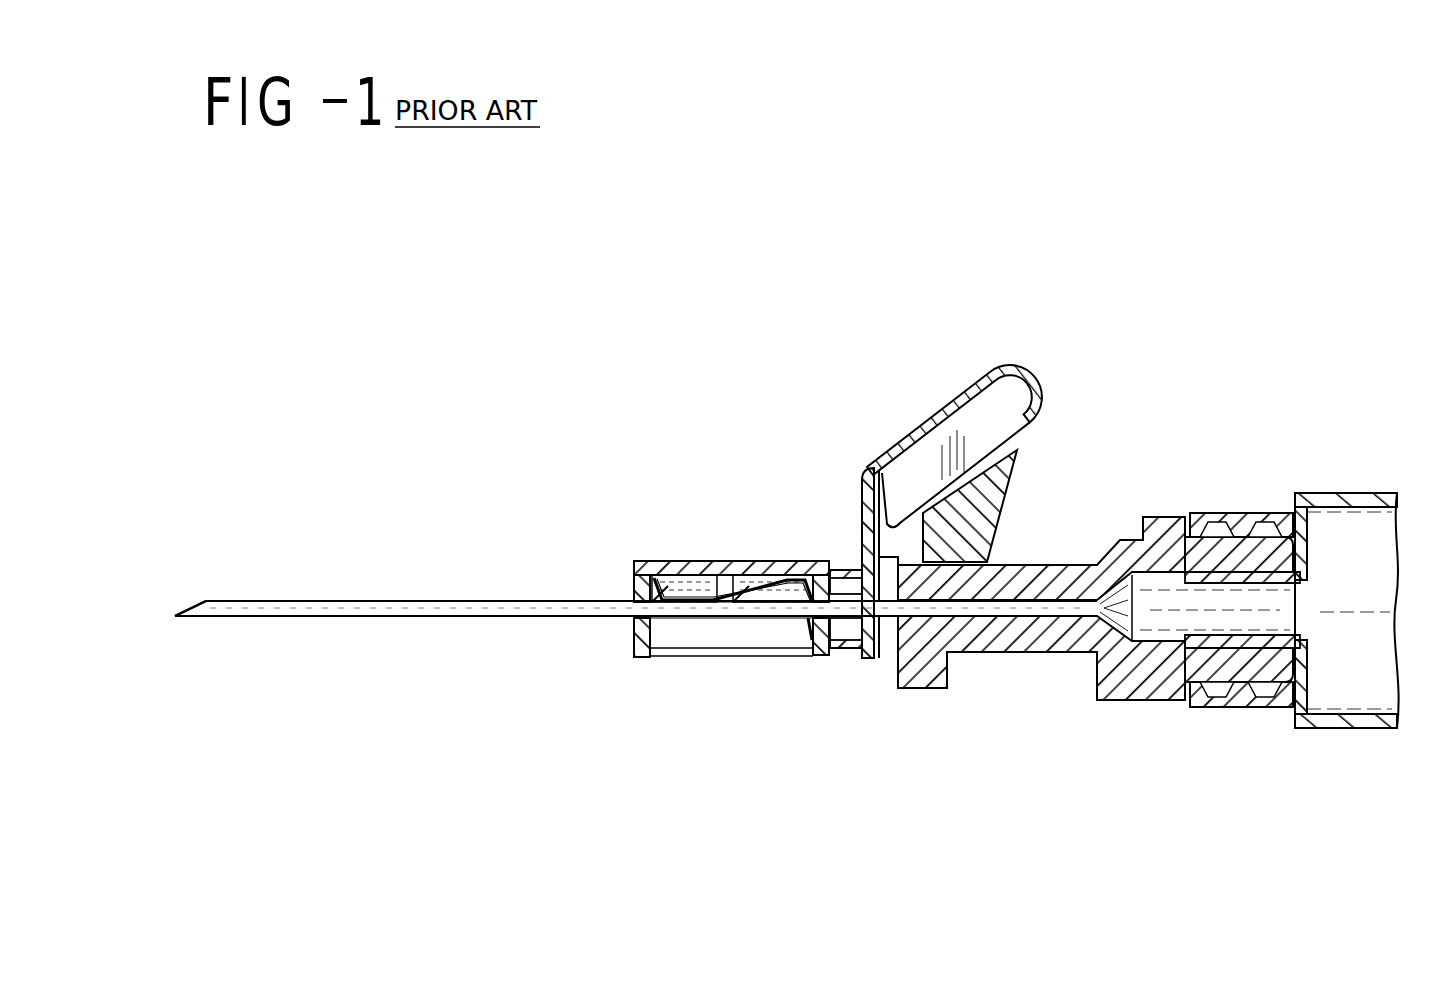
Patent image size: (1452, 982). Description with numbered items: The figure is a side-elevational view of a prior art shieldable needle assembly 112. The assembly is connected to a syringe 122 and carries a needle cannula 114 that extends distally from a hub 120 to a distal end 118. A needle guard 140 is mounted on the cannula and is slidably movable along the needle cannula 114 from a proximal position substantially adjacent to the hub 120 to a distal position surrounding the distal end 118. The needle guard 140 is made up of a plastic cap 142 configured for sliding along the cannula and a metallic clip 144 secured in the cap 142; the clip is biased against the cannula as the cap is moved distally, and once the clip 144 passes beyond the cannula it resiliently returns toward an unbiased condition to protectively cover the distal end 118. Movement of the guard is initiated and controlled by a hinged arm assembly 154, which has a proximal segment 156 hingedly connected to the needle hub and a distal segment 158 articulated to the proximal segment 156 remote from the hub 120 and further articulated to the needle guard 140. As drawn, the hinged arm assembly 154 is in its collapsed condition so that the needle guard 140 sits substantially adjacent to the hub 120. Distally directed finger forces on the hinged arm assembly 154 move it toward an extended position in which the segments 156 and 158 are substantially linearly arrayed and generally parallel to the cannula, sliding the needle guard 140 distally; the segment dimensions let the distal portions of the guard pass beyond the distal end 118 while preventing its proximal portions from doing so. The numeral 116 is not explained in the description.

The needle shield assembly 112 is at (1002, 690).
The needle cannula 114 is at (327, 617).
The collar 116 is at (1150, 655).
The distal end 118 is at (178, 617).
The hub 120 is at (1060, 672).
The syringe 122 is at (1331, 470).
The needle guard 140 is at (688, 553).
The plastic cap 142 is at (740, 562).
The metallic clip 144 is at (664, 562).
The hinged arm assembly 154 is at (1014, 360).
The proximal segment 156 is at (998, 483).
The distal segment 158 is at (899, 462).